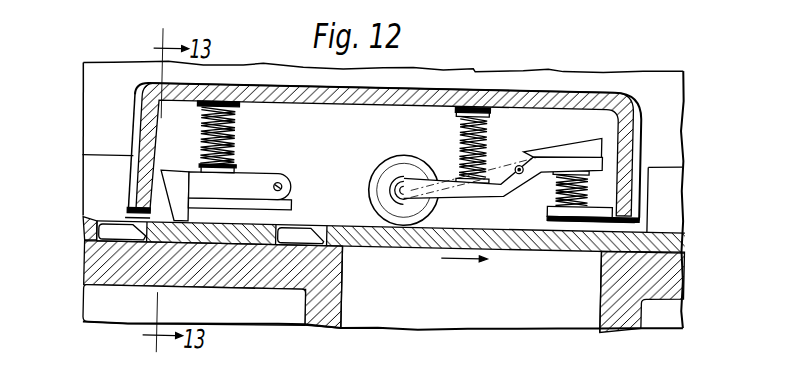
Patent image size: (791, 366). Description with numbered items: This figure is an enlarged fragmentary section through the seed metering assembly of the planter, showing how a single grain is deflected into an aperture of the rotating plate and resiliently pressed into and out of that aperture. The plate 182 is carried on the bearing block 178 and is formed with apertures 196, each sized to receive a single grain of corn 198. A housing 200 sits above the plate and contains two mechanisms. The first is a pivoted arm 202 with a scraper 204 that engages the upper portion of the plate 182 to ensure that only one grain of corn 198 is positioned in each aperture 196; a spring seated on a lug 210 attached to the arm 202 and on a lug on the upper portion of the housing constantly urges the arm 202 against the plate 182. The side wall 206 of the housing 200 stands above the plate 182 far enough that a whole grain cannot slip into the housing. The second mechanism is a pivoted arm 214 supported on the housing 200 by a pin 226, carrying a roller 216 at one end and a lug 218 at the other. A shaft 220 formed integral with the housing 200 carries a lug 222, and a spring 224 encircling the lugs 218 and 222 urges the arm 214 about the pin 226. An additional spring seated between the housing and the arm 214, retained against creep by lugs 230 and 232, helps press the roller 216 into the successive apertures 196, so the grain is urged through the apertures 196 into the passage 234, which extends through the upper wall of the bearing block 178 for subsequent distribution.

The bearing block 178 is at (343, 301).
The plate 182 is at (507, 236).
The apertures 196 is at (88, 219).
The grain of corn 198 is at (302, 234).
The housing 200 is at (568, 87).
The pivoted arm 202 is at (238, 180).
The scraper 204 is at (169, 193).
The side wall 206 is at (142, 153).
The lug 210 is at (121, 359).
The pivoted arm 214 is at (492, 180).
The roller 216 is at (383, 177).
The lug 218 is at (572, 158).
The shaft 220 is at (568, 204).
The lug 222 is at (457, 122).
The spring 224 is at (550, 169).
The pin 226 is at (518, 158).
The lug 230 is at (483, 108).
The lug 232 is at (472, 161).
The passage 234 is at (473, 306).